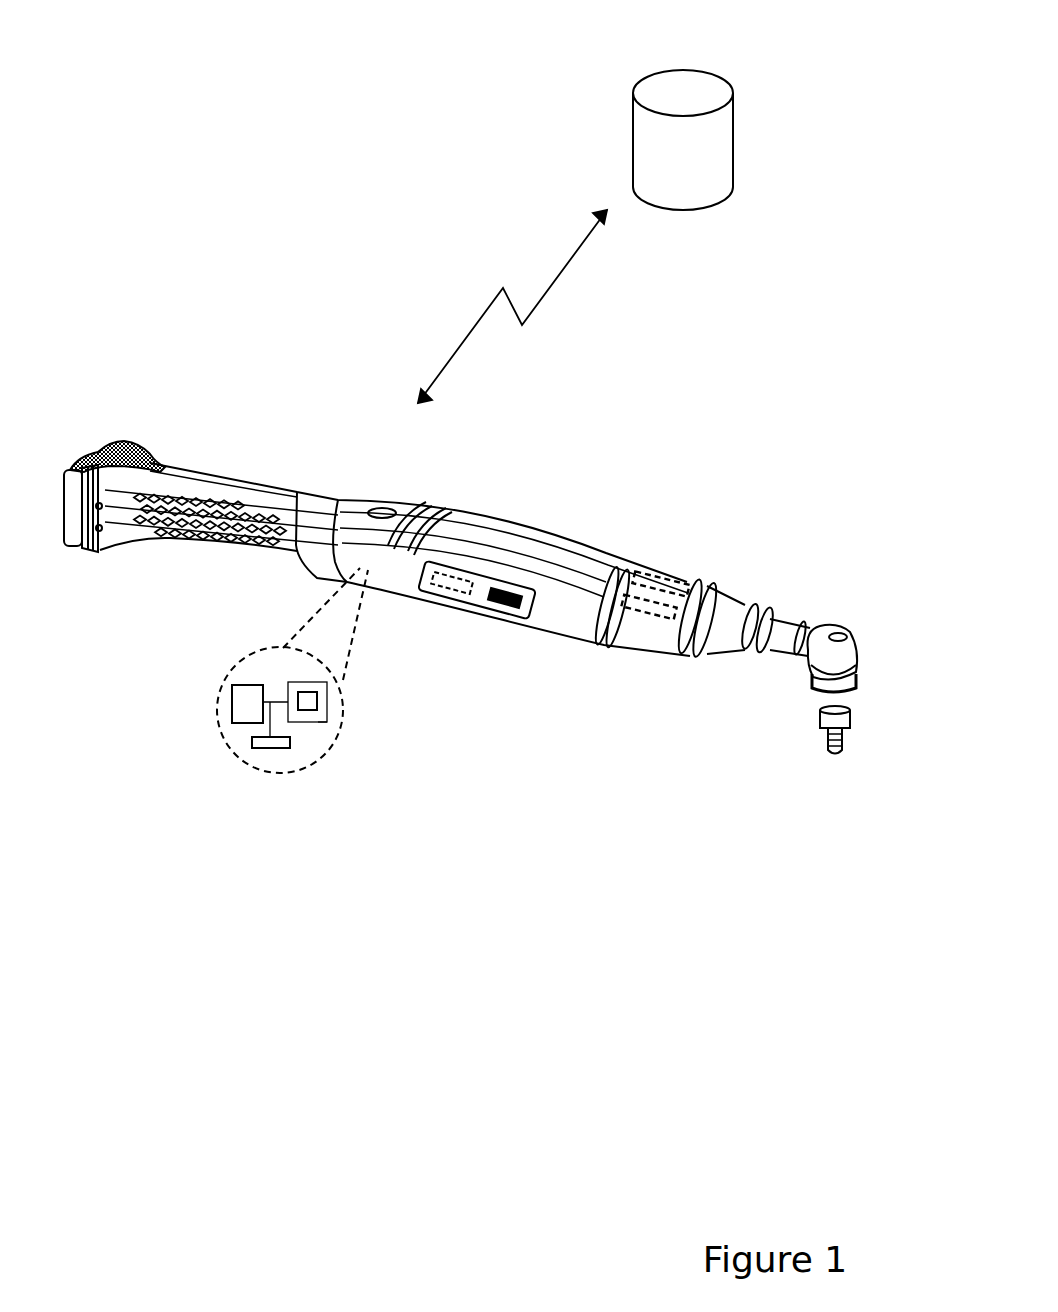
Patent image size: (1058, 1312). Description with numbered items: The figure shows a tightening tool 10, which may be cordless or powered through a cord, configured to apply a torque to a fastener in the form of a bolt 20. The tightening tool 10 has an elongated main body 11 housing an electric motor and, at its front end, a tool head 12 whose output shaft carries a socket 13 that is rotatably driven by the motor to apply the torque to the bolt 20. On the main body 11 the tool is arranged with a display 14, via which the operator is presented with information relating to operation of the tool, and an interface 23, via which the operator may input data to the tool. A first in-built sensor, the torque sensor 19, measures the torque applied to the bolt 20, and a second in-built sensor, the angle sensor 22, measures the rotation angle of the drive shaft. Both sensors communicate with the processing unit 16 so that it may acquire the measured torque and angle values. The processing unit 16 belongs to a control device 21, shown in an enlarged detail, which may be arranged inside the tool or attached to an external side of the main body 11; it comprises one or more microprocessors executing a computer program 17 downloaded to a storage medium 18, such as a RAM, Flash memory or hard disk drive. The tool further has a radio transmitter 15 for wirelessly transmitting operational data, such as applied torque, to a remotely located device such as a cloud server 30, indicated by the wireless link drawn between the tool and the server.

The tightening tool 10 is at (486, 609).
The main body 11 is at (557, 530).
The tool head 12 is at (838, 634).
The socket 13 is at (813, 685).
The display 14 is at (500, 598).
The radio transmitter 15 is at (272, 755).
The processing unit 16 is at (233, 700).
The computer program 17 is at (298, 694).
The storage medium 18 is at (305, 725).
The torque sensor 19 is at (667, 577).
The bolt 20 is at (845, 708).
The control device 21 is at (266, 695).
The angle sensor 22 is at (648, 607).
The interface 23 is at (445, 582).
The cloud server 30 is at (682, 72).